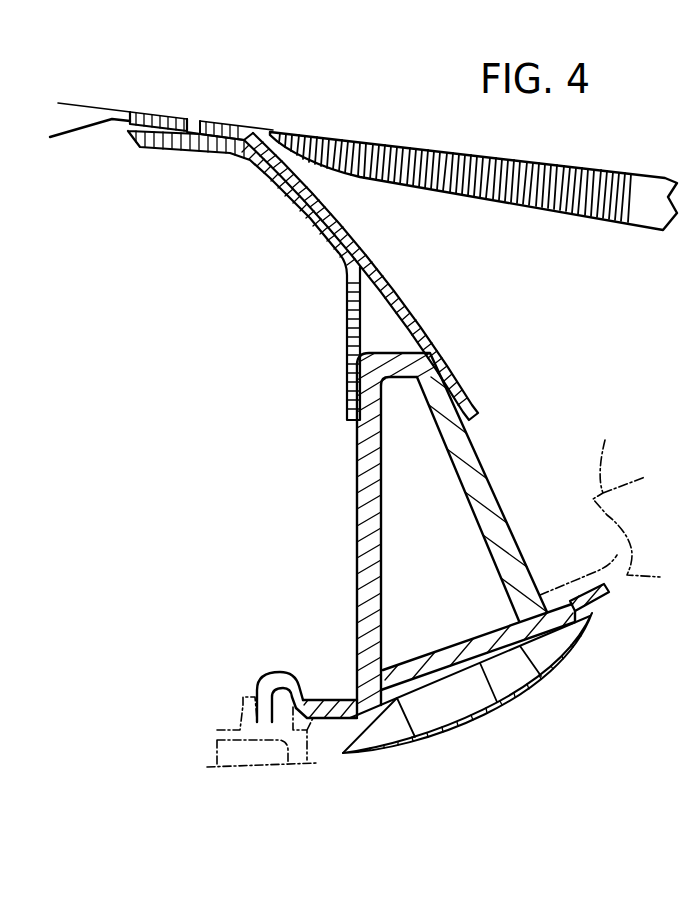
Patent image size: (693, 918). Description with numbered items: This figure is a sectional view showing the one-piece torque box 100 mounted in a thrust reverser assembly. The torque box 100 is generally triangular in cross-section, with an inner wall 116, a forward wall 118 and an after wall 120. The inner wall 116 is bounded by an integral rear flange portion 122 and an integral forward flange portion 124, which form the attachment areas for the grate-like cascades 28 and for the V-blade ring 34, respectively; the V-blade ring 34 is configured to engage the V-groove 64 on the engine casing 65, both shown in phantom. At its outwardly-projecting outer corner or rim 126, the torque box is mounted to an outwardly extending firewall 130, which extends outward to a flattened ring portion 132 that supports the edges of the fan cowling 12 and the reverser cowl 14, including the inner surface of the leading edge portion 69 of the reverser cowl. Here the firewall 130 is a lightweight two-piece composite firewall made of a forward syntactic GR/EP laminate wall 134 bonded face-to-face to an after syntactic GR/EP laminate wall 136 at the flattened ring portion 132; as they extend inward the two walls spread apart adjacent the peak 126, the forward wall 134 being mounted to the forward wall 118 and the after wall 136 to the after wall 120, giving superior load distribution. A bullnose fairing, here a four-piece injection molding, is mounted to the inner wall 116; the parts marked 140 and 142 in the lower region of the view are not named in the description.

The fan cowling 12 is at (137, 113).
The reverser cowl 14 is at (585, 170).
The cascades 28 is at (605, 452).
The V-blade ring 34 is at (280, 672).
The V-groove 64 is at (251, 689).
The engine casing 65 is at (230, 730).
The leading edge portion 69 is at (217, 120).
The torque box 100 is at (483, 426).
The inner wall 116 is at (463, 640).
The forward wall 118 is at (363, 467).
The after wall 120 is at (477, 473).
The rear flange portion 122 is at (595, 600).
The forward flange portion 124 is at (318, 722).
The outer corner or rim 126 is at (397, 356).
The firewall 130 is at (273, 200).
The flattened ring portion 132 is at (172, 152).
The forward syntactic GR/EP laminate wall 134 is at (300, 222).
The after syntactic GR/EP laminate wall 136 is at (330, 232).
The sealing lip 140 is at (514, 697).
The reinforcing rib 142 is at (413, 735).